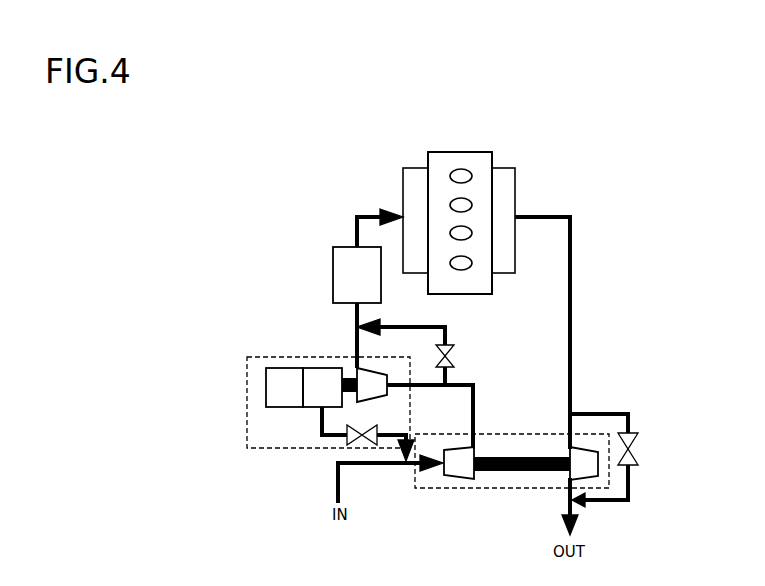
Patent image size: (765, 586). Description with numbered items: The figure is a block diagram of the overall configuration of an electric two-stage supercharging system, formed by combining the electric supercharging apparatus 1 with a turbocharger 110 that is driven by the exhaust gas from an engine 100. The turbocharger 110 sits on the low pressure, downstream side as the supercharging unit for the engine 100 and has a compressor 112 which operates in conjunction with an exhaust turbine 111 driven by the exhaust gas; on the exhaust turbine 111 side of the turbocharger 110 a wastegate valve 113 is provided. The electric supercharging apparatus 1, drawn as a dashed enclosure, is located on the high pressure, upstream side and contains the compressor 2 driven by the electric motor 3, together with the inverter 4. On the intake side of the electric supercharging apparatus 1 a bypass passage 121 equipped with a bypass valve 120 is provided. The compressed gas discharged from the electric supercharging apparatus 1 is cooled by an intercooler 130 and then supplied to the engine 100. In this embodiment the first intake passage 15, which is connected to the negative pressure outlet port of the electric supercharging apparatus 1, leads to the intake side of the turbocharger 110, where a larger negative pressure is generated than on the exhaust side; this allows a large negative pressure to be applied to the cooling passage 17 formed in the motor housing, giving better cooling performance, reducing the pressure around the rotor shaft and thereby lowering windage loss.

The electric supercharging apparatus 1 is at (246, 403).
The compressor 2 is at (387, 398).
The electric motor 3 is at (326, 368).
The inverter 4 is at (275, 368).
The first intake passage 15 is at (322, 418).
The cooling passage 17 is at (348, 440).
The engine 100 is at (470, 152).
The turbocharger 110 is at (517, 490).
The exhaust turbine 111 is at (567, 481).
The compressor 112 is at (455, 478).
The wastegate valve 113 is at (638, 449).
The bypass valve 120 is at (454, 356).
The bypass passage 121 is at (447, 327).
The intercooler 130 is at (342, 247).